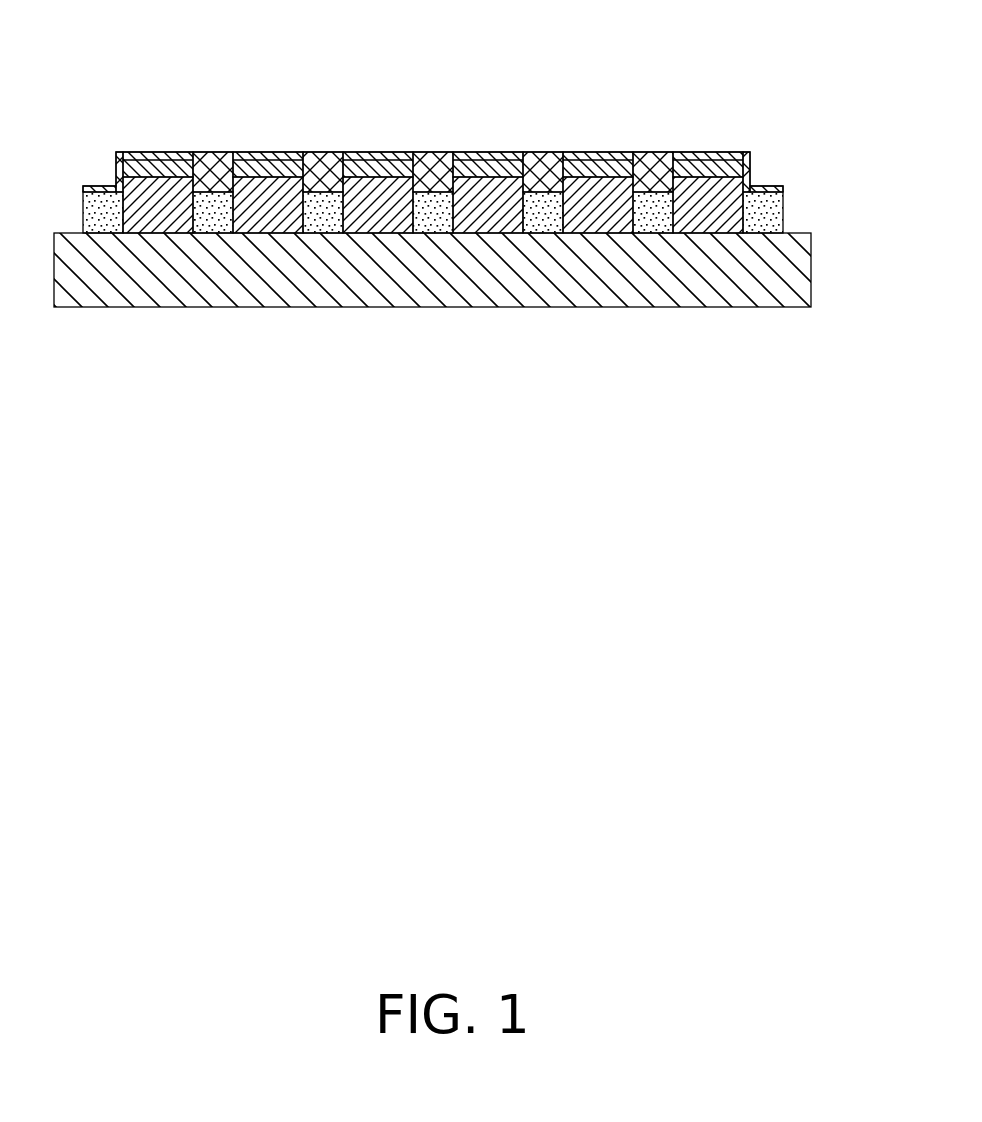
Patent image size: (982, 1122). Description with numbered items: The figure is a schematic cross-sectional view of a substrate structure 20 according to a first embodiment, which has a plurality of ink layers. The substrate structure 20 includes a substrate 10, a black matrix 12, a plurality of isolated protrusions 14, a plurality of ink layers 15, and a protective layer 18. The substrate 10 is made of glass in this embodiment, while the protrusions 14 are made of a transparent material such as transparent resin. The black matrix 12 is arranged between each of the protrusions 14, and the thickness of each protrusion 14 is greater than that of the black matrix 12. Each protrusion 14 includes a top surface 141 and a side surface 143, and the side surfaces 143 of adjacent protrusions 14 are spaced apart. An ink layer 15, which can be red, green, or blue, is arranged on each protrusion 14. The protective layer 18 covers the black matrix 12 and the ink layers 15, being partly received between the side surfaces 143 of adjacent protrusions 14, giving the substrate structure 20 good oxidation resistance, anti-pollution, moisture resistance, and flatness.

The substrate structure 20 is at (502, 57).
The substrate 10 is at (783, 268).
The black matrix 12 is at (773, 207).
The isolated protrusions 14 is at (733, 190).
The top surface 141 is at (484, 160).
The side surface 143 is at (552, 165).
The ink layers 15 is at (726, 150).
The protective layer 18 is at (315, 162).